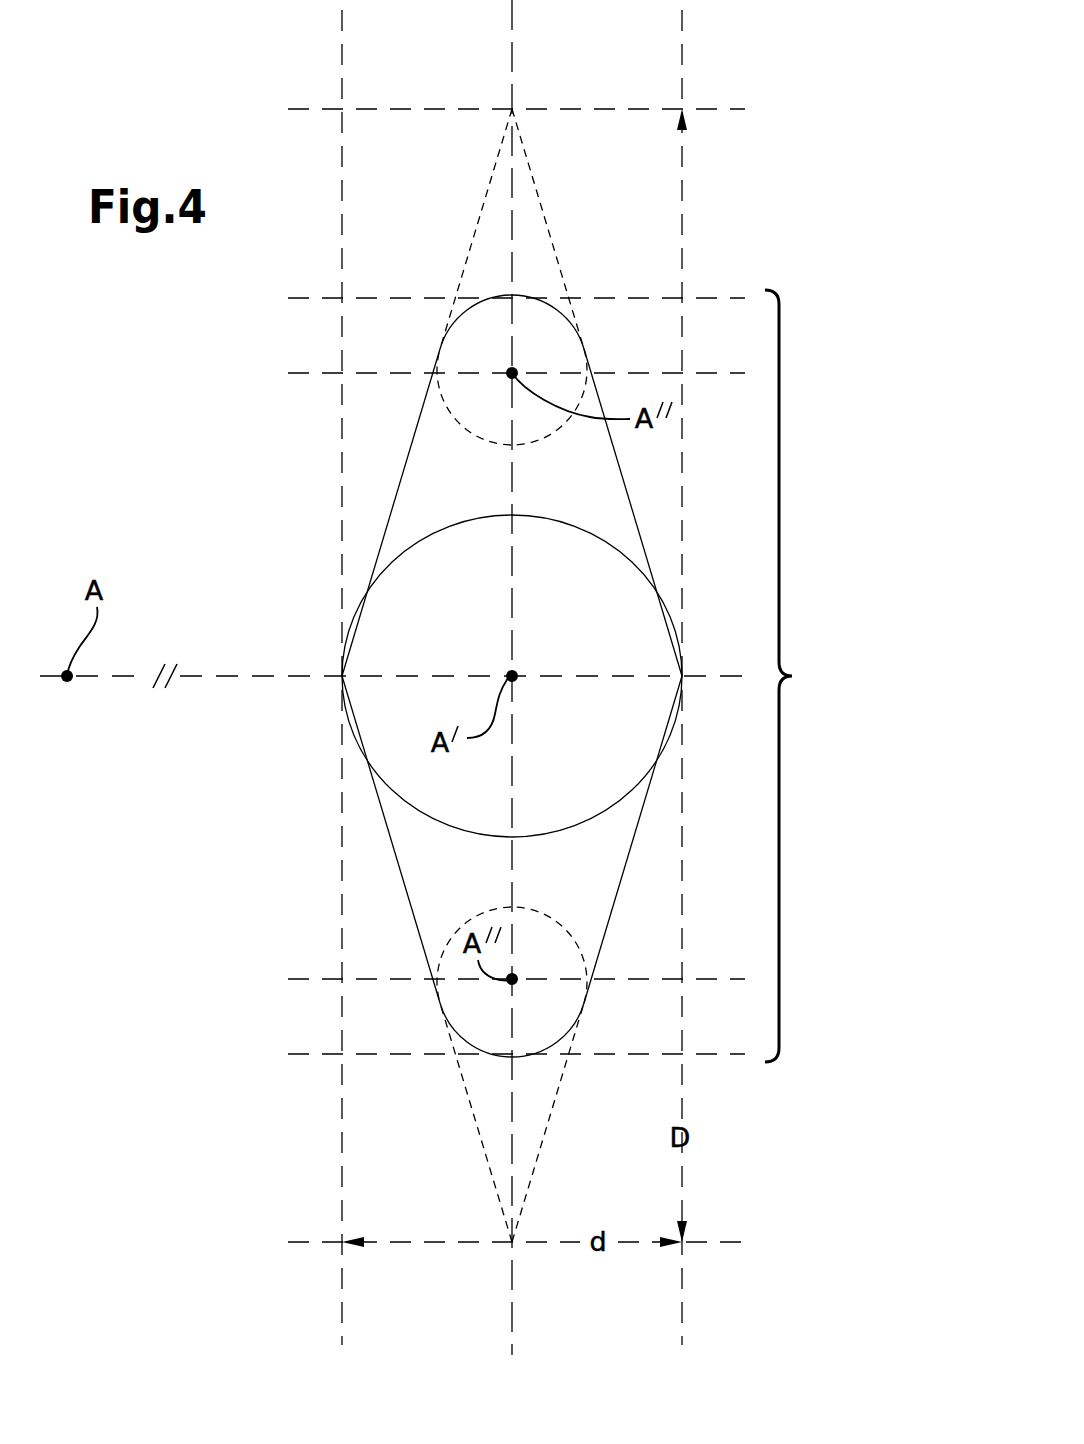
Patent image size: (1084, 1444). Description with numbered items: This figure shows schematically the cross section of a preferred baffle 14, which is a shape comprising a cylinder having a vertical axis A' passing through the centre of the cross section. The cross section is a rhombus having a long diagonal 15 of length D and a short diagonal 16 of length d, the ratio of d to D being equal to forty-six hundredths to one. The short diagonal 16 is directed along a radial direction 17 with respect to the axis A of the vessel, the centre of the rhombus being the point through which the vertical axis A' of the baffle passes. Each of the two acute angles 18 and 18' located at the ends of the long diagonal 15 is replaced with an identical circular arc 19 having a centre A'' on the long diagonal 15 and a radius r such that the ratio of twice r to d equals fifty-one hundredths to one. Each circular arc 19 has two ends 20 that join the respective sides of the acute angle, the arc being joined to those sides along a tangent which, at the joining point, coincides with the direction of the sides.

The baffle 14 is at (799, 676).
The long diagonal 15 is at (512, 576).
The short diagonal 16 is at (620, 678).
The radial direction 17 is at (70, 677).
The acute angle 18 is at (525, 177).
The acute angle 18' is at (497, 1160).
The circular arc 19 is at (517, 298).
The ends 20 is at (440, 349).